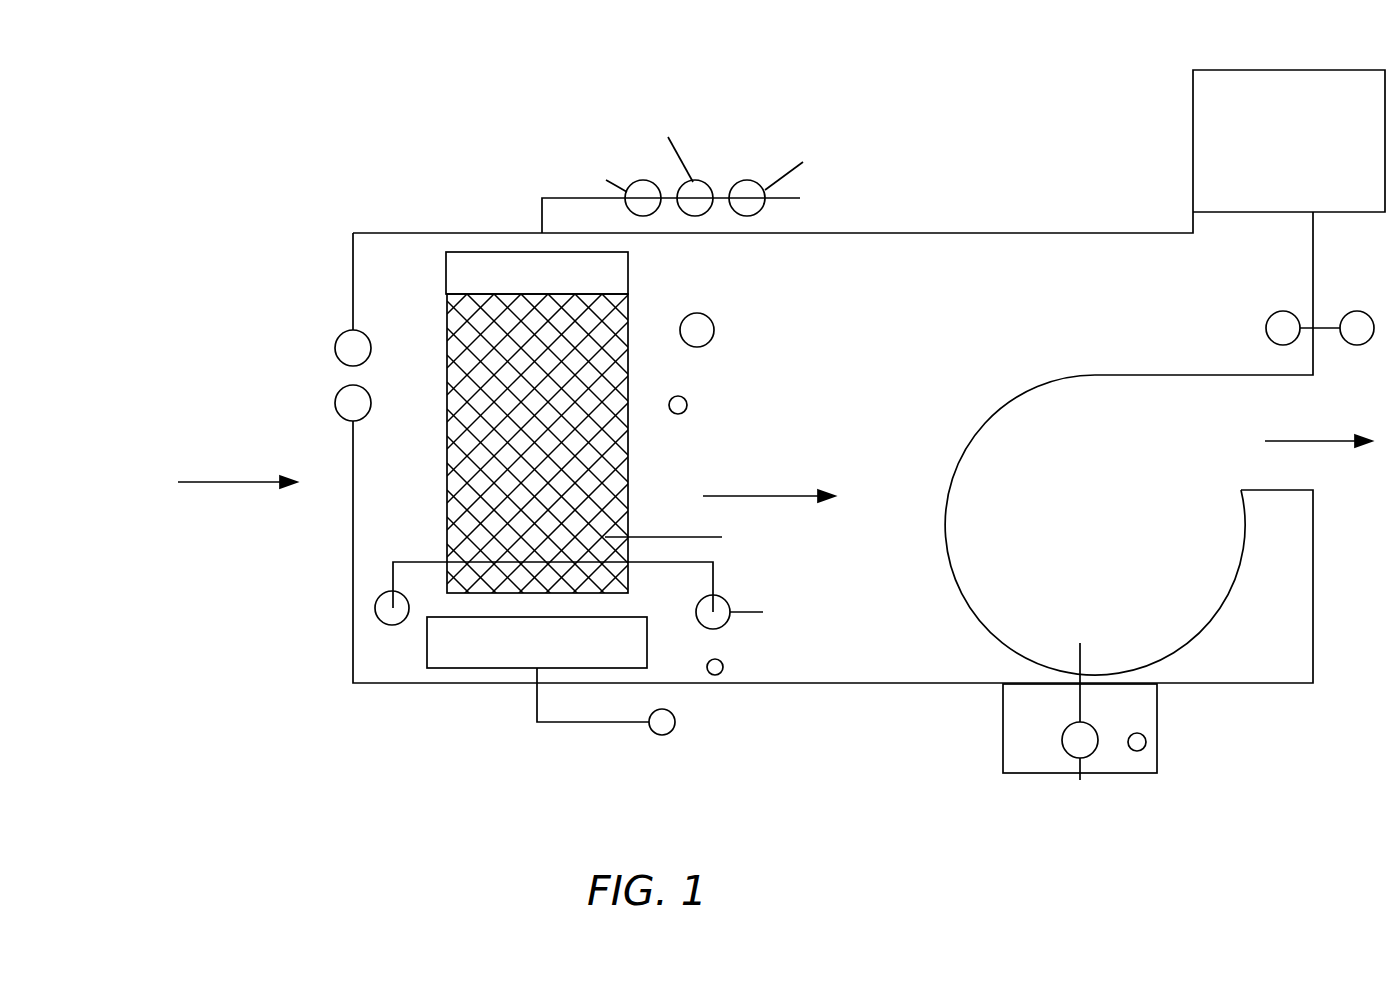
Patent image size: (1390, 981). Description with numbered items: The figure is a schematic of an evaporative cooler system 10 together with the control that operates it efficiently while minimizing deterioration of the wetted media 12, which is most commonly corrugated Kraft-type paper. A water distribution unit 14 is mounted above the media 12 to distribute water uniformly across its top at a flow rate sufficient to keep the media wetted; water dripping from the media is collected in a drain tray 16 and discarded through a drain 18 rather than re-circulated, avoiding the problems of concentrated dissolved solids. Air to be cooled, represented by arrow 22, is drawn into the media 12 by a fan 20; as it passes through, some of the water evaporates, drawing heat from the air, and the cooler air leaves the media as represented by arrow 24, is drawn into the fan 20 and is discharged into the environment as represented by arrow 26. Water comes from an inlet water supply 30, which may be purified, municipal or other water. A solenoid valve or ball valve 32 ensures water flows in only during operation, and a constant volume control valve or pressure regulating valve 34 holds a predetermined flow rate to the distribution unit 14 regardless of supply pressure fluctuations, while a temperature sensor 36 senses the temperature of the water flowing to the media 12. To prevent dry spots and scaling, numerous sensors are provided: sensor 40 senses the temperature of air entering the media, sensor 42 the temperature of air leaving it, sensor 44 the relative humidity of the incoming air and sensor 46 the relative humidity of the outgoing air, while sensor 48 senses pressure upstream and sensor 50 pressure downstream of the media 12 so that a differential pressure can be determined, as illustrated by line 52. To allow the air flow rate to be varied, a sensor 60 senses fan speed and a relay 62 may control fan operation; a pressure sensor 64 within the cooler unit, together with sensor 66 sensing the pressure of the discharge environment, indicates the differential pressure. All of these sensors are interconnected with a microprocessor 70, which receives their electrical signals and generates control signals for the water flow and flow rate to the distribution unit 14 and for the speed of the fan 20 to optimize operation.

The evaporative cooler system 10 is at (828, 818).
The media 12 is at (447, 500).
The water distribution unit 14 is at (446, 270).
The drain tray 16 is at (641, 621).
The drain 18 is at (650, 735).
The fan 20 is at (1220, 605).
The arrow representing air to be cooled 22 is at (253, 483).
The arrow representing cooled air exhausted from the media 24 is at (740, 497).
The arrow representing discharged air 26 is at (1330, 445).
The inlet water supply 30 is at (784, 203).
The solenoid valve or ball valve 32 is at (754, 181).
The constant volume control valve or pressure regulating valve 34 is at (706, 182).
The temperature sensor 36 is at (647, 181).
The sensor 40 is at (346, 334).
The sensor 42 is at (712, 318).
The sensor 44 is at (345, 418).
The sensor 46 is at (684, 398).
The sensor 48 is at (375, 608).
The sensor 50 is at (727, 600).
The line 52 is at (400, 561).
The sensor 60 is at (1062, 741).
The relay 62 is at (1145, 750).
The pressure sensor 64 is at (1266, 330).
The sensor 66 is at (1357, 312).
The microprocessor 70 is at (1193, 140).